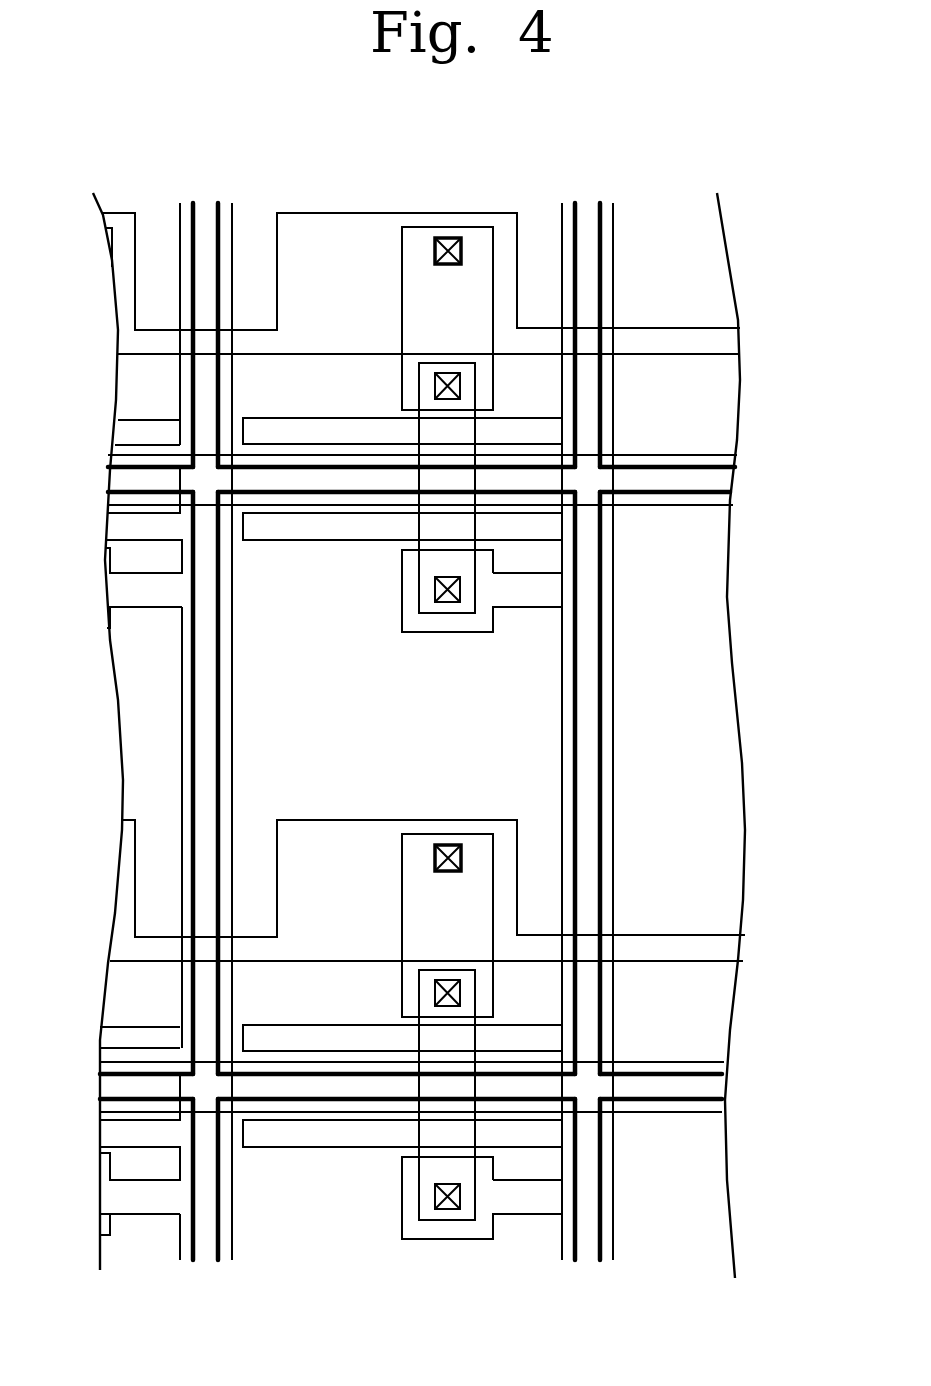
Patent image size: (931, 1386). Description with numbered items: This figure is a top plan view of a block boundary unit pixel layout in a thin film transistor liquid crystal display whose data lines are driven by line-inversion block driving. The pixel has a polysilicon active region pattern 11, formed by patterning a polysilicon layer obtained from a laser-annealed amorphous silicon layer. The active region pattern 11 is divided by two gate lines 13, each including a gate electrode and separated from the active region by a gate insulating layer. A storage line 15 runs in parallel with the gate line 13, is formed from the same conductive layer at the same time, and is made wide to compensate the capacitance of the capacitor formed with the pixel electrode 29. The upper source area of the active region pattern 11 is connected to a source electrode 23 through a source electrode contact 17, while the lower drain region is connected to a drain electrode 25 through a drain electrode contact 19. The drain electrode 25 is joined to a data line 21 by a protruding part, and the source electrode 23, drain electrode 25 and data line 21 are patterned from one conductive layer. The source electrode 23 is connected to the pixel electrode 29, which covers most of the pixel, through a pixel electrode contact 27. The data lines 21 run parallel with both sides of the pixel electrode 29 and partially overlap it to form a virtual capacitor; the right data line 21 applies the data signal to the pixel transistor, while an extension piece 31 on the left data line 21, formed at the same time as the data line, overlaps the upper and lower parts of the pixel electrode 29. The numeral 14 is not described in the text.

The polysilicon active region pattern 11 is at (448, 613).
The gate line 13 is at (705, 443).
The pixel electrode 14 is at (320, 840).
The storage line 15 is at (717, 342).
The source electrode contact 17 is at (435, 386).
The drain electrode contact 19 is at (433, 587).
The data line 21 is at (615, 668).
The source electrode 23 is at (402, 298).
The drain electrode 25 is at (402, 560).
The pixel electrode contact 27 is at (435, 251).
The pixel electrode 29 is at (600, 782).
The extension piece 31 is at (276, 425).